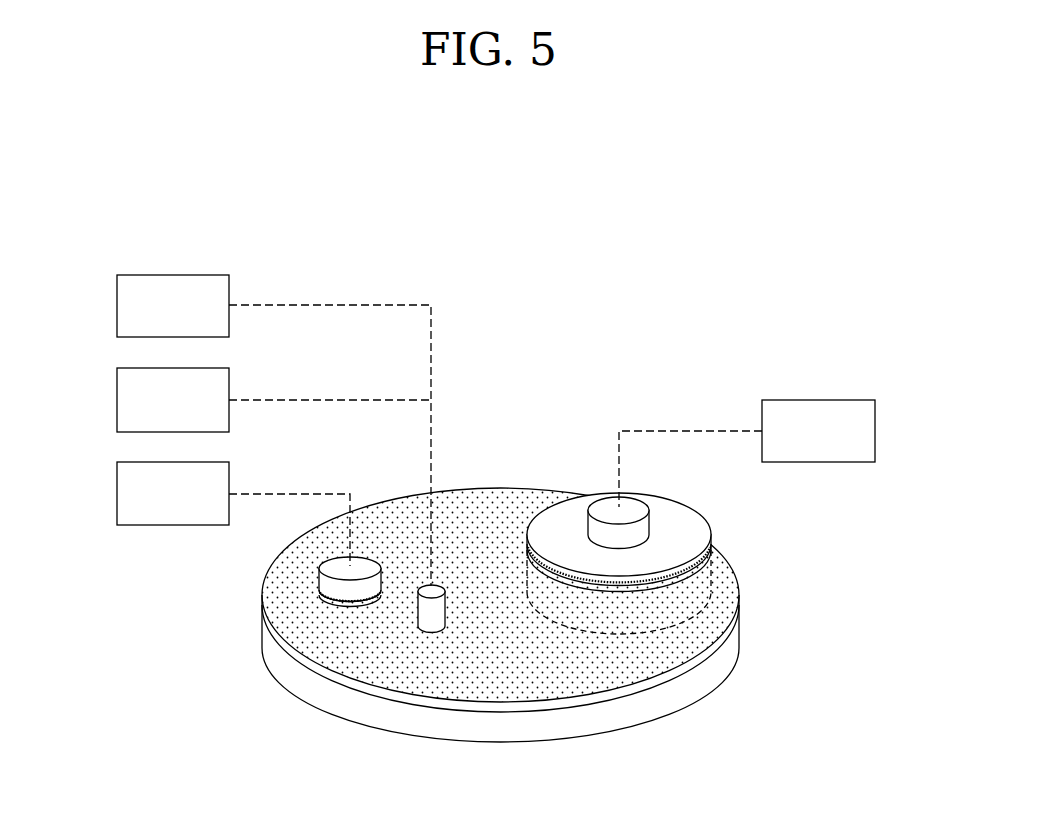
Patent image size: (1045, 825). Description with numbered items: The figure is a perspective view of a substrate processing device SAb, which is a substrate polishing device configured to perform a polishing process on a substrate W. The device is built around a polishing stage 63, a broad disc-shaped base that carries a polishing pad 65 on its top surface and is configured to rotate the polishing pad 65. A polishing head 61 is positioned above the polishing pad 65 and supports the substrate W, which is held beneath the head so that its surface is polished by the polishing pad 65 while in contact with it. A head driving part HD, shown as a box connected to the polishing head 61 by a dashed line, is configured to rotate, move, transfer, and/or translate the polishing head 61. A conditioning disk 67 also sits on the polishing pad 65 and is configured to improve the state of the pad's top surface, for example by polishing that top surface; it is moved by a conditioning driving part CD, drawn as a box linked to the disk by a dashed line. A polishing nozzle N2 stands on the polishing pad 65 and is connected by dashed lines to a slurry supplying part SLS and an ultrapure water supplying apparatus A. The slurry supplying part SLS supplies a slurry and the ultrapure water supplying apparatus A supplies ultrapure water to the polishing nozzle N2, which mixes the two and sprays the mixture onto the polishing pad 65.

The substrate processing device SAb is at (898, 260).
The polishing head 61 is at (712, 551).
The substrate W is at (710, 565).
The polishing stage 63 is at (272, 645).
The polishing pad 65 is at (700, 632).
The conditioning disk 67 is at (320, 597).
The polishing nozzle N2 is at (434, 587).
The ultrapure water supplying apparatus A is at (117, 304).
The slurry supplying part SLS is at (117, 400).
The conditioning driving part CD is at (117, 493).
The head driving part HD is at (875, 430).